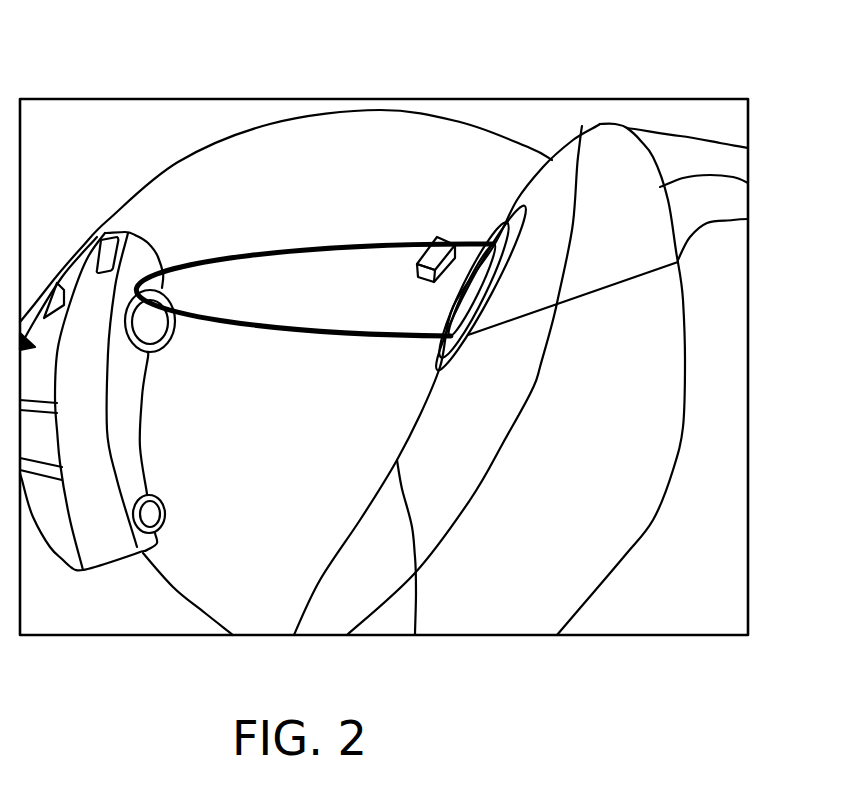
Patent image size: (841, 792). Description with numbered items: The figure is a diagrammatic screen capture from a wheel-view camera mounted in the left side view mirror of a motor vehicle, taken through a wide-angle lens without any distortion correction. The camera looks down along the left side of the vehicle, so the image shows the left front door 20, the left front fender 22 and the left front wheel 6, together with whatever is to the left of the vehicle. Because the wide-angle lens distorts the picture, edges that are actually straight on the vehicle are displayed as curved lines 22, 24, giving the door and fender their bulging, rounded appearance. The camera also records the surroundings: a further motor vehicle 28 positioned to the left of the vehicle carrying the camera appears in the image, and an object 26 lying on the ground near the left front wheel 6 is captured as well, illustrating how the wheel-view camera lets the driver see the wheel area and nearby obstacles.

The left front wheel 6 is at (485, 257).
The left front door 20 is at (592, 393).
The left front fender 22 is at (178, 162).
The curved line 24 is at (173, 587).
The object 26 is at (437, 238).
The further motor vehicle 28 is at (98, 528).